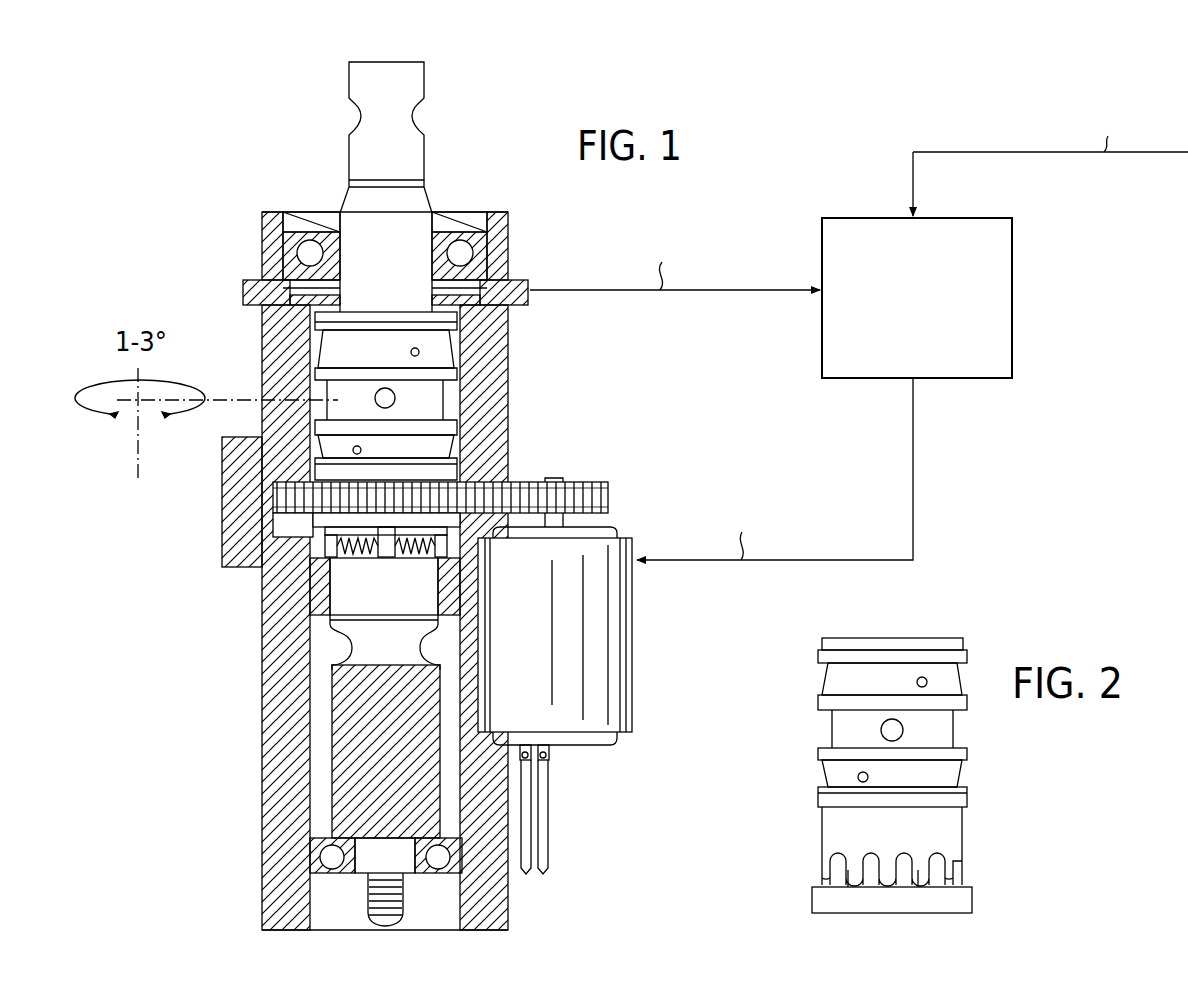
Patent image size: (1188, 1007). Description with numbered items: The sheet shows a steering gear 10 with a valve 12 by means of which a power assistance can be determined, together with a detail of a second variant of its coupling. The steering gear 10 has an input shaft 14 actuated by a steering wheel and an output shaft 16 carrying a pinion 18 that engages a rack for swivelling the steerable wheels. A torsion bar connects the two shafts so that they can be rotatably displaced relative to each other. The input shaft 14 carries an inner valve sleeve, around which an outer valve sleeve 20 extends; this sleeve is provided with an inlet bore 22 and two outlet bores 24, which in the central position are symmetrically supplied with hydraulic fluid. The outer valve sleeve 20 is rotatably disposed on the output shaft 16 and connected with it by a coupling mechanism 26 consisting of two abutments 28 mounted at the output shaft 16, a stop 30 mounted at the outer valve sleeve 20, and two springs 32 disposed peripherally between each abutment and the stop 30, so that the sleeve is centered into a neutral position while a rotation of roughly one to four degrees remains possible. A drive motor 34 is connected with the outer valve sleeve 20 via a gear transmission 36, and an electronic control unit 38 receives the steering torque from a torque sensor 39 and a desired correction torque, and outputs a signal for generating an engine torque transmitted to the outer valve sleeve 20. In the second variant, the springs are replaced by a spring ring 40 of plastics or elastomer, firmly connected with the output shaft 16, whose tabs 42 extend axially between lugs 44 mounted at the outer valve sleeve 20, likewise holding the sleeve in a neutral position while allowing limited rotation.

In FIG. 1, the steering gear 10 is at (255, 702).
In FIG. 1, the valve 12 is at (524, 437).
In FIG. 1, the input shaft 14 is at (366, 148).
In FIG. 1, the output shaft 16 is at (343, 602).
In FIG. 1, the pinion 18 is at (352, 788).
In FIG. 1, the outer valve sleeve 20 is at (330, 392).
In FIG. 2, the outer valve sleeve 20 is at (947, 836).
In FIG. 1, the inlet bore 22 is at (396, 398).
In FIG. 1, the outlet bores 24 is at (420, 352).
In FIG. 1, the coupling mechanism 26 is at (303, 525).
In FIG. 2, the coupling mechanism 26 is at (816, 858).
In FIG. 1, the abutments 28 is at (328, 542).
In FIG. 1, the stop 30 is at (385, 550).
In FIG. 1, the springs 32 is at (318, 580).
In FIG. 1, the drive motor 34 is at (612, 678).
In FIG. 1, the gear transmission 36 is at (608, 498).
In FIG. 1, the electronic control unit 38 is at (1012, 302).
In FIG. 1, the torque sensor 39 is at (526, 280).
In FIG. 2, the spring ring 40 is at (967, 900).
In FIG. 2, the tabs 42 is at (918, 870).
In FIG. 2, the lugs 44 is at (853, 870).